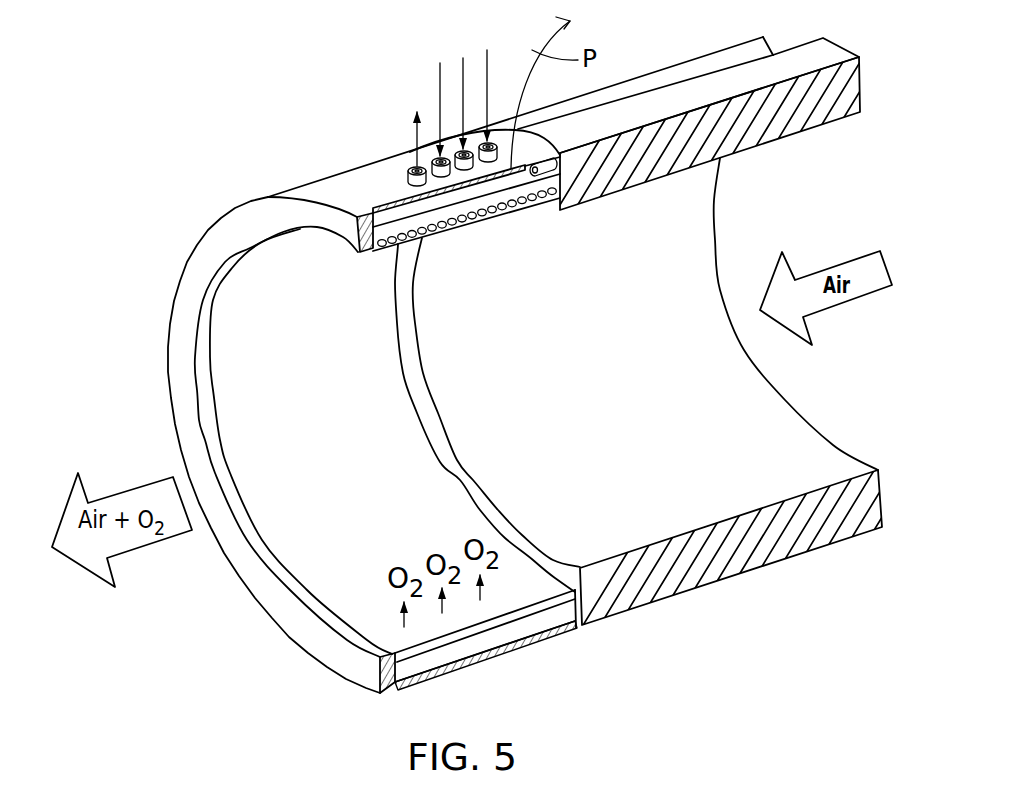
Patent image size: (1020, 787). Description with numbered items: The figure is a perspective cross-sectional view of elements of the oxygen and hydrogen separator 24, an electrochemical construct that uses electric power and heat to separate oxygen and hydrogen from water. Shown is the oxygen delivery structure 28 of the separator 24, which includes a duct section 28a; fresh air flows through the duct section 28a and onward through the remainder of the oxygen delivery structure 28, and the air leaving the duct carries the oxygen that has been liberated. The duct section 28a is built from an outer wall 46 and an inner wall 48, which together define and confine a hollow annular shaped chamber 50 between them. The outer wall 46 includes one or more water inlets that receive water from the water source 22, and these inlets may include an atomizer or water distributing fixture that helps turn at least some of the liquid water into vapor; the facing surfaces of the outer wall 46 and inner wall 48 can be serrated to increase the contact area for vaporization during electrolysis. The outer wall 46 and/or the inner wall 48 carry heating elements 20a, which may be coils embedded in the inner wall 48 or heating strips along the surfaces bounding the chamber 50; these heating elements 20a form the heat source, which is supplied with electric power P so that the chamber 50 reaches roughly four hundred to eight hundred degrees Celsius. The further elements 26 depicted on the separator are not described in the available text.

The oxygen delivery structure 28 is at (663, 63).
The duct section 28a is at (310, 183).
The oxygen and hydrogen separator 24 is at (337, 163).
The membrane elements 26 is at (407, 173).
The water source 22 is at (487, 159).
The heating elements 20a is at (497, 217).
The outer wall 46 is at (508, 652).
The inner wall 48 is at (403, 646).
The hollow annular shaped chamber 50 is at (417, 663).